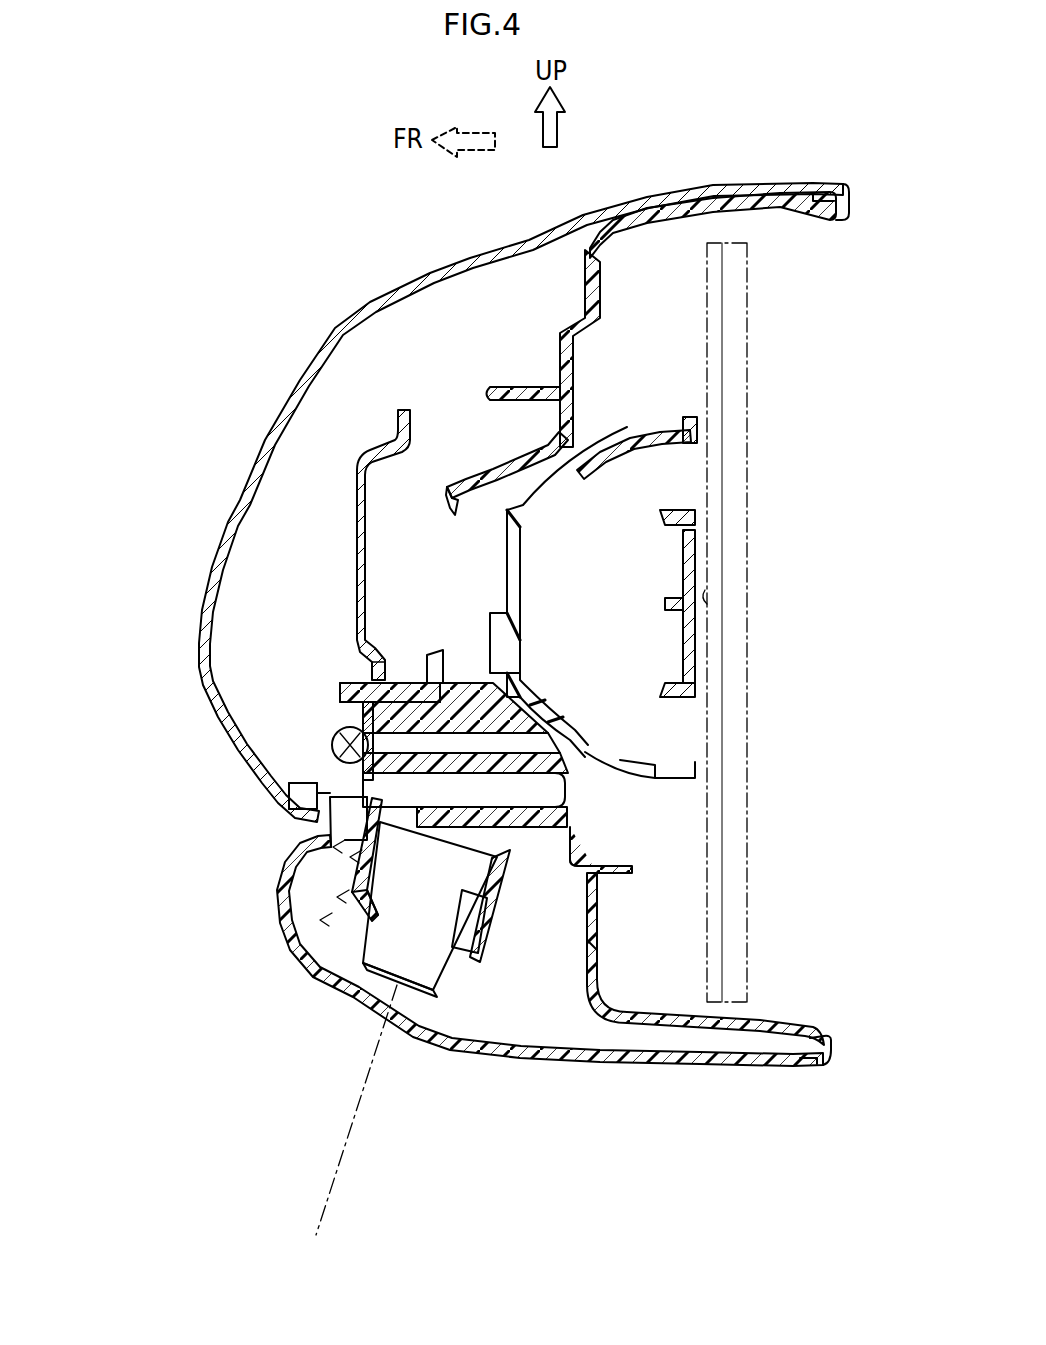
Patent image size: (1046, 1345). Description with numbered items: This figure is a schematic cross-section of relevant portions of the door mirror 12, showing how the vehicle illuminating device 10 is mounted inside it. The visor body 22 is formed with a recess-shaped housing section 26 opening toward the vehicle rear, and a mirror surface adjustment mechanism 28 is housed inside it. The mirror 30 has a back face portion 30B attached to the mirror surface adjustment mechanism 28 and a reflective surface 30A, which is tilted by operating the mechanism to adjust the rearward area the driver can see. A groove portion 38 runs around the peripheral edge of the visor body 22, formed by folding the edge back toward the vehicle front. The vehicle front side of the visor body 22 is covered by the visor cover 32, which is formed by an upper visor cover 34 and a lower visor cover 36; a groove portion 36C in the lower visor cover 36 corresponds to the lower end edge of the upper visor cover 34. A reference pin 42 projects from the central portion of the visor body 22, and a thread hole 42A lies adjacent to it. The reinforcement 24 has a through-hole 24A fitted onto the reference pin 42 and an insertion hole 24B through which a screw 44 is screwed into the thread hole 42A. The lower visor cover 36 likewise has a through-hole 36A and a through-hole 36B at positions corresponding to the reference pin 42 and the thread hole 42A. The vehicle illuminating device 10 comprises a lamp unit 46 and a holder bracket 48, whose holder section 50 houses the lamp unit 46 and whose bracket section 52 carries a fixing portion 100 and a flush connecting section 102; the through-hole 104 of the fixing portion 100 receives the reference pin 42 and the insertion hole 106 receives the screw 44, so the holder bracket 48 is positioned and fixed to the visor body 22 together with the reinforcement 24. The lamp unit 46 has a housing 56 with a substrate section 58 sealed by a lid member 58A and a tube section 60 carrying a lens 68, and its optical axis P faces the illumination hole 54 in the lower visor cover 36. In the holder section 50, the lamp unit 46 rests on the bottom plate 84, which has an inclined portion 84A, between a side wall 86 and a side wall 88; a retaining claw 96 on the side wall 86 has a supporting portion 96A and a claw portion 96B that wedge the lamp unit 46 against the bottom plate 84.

The vehicle illuminating device 10 is at (320, 920).
The door mirror 12 is at (814, 153).
The visor body 22 is at (562, 328).
The reinforcement 24 is at (357, 500).
The through-hole 24A is at (392, 700).
The insertion hole 24B is at (395, 748).
The housing section 26 is at (642, 378).
The mirror surface adjustment mechanism 28 is at (619, 605).
The mirror 30 is at (766, 622).
The reflective surface 30A is at (724, 548).
The back face portion 30B is at (707, 600).
The visor cover 32 is at (118, 810).
The upper visor cover 34 is at (262, 797).
The lower visor cover 36 is at (272, 922).
The through-hole 36A is at (343, 683).
The through-hole 36B is at (346, 747).
The groove portion 36C is at (288, 797).
The groove portion 38 is at (822, 205).
The reference pin 42 is at (341, 690).
The thread hole 42A is at (460, 757).
The screw 44 is at (345, 740).
The lamp unit 46 is at (470, 920).
The holder bracket 48 is at (208, 842).
The holder section 50 is at (337, 897).
The bracket section 52 is at (333, 847).
The illumination hole 54 is at (410, 1035).
The housing 56 is at (455, 985).
The substrate section 58 is at (620, 926).
The lid member 58A is at (562, 824).
The tube section 60 is at (620, 926).
The lens 68 is at (445, 1005).
The bottom plate 84 is at (487, 960).
The inclined portion 84A is at (352, 905).
The side wall 86 is at (503, 907).
The side wall 88 is at (350, 858).
The retaining claw 96 is at (632, 901).
The supporting portion 96A is at (590, 948).
The claw portion 96B is at (569, 856).
The fixing portion 100 is at (403, 702).
The connecting section 102 is at (380, 805).
The through-hole 104 is at (383, 672).
The insertion hole 106 is at (385, 810).
The optical axis P is at (375, 1150).